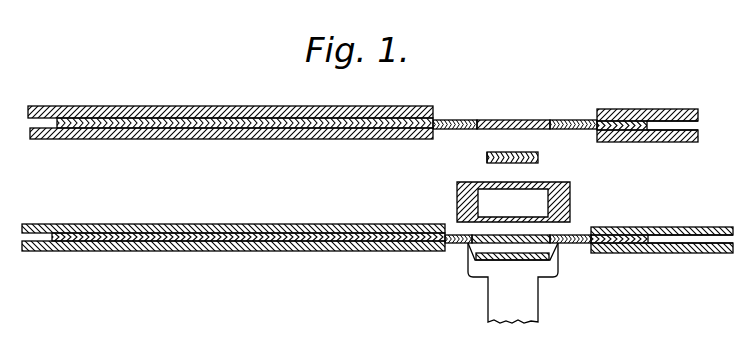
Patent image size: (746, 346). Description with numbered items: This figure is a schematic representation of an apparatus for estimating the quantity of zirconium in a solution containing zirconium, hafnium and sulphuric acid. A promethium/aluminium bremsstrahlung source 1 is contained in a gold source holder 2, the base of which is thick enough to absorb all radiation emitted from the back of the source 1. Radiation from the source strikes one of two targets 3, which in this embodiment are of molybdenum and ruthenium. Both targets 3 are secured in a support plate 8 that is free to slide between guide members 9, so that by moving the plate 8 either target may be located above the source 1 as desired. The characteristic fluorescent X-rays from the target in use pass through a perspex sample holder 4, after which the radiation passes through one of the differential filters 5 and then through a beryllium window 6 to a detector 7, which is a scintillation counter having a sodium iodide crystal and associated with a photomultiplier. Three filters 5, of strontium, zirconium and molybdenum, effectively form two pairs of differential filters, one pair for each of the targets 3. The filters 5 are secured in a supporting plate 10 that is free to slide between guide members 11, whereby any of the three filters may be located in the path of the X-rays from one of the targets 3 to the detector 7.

The bremsstrahlung source 1 is at (503, 152).
The source holder 2 is at (487, 158).
The targets 3 is at (173, 122).
The sample holder 4 is at (457, 207).
The differential filters 5 is at (167, 238).
The beryllium window 6 is at (527, 262).
The detector 7 is at (493, 307).
The support plate 8 is at (462, 129).
The guide members 9 is at (420, 116).
The supporting plate 10 is at (465, 245).
The guide members 11 is at (274, 243).